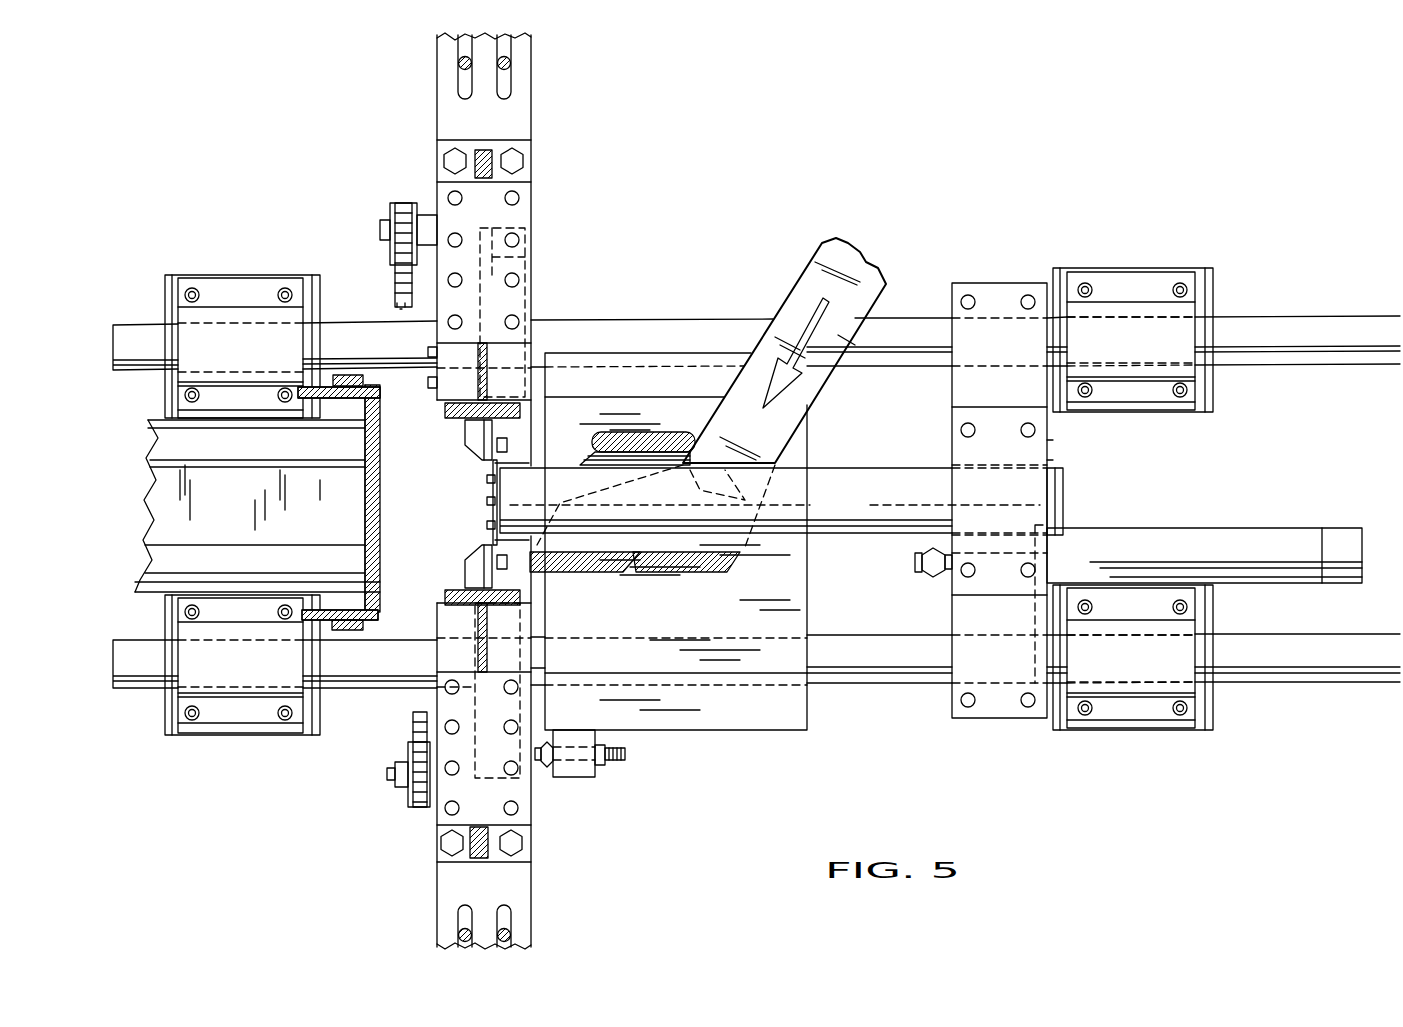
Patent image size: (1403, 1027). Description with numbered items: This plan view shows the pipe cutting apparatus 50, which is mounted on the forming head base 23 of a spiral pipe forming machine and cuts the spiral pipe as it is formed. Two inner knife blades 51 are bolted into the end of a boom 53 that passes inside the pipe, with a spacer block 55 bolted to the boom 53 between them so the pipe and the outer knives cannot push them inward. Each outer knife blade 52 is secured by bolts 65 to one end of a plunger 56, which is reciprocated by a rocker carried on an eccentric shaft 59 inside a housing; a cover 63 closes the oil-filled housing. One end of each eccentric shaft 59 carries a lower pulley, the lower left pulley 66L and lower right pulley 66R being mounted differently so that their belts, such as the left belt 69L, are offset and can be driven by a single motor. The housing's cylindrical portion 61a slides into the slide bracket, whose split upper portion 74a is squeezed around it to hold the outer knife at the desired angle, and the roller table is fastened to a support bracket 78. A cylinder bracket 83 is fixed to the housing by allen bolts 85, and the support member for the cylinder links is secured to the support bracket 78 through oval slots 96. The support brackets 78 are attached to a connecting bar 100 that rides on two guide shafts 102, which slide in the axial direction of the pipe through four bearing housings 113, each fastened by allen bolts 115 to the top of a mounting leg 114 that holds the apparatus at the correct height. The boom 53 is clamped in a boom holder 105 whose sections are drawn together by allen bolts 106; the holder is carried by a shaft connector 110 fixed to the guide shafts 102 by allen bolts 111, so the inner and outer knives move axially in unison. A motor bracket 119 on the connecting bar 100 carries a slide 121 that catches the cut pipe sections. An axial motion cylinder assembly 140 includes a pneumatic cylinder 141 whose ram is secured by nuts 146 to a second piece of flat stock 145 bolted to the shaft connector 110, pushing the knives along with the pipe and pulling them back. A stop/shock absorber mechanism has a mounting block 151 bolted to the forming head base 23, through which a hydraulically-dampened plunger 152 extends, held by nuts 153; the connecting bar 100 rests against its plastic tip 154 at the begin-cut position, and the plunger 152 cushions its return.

The forming head base 23 is at (775, 596).
The pipe cutting apparatus 50 is at (902, 268).
The inner knife blades 51 is at (487, 479).
The outer knife blades 52 is at (505, 447).
The boom 53 is at (781, 501).
The spacer block 55 is at (493, 502).
The plunger 56 is at (468, 443).
The eccentric shaft 59 is at (388, 216).
The cylindrical portion 61a is at (447, 412).
The cover 63 is at (496, 185).
The bolts 65 is at (505, 437).
The lower left pulley 66L is at (400, 205).
The lower right pulley 66R is at (395, 805).
The left belt 69L is at (392, 300).
The split upper portion 74a is at (503, 352).
The support bracket 78 is at (540, 250).
The cylinder bracket 83 is at (486, 152).
The allen bolts 85 is at (452, 156).
The oval slot 96 is at (470, 80).
The connecting bar 100 is at (518, 228).
The guide shafts 102 is at (1330, 343).
The boom holder 105 is at (1048, 452).
The allen bolts 106 is at (1028, 437).
The shaft connector 110 is at (1040, 283).
The allen bolts 111 is at (1028, 295).
The bearing housings 113 is at (248, 300).
The mounting legs 114 is at (315, 278).
The allen bolts 115 is at (192, 288).
The motor bracket 119 is at (333, 395).
The slide 121 is at (190, 503).
The axial motion cylinder assembly 140 is at (1287, 508).
The pneumatic cylinder 141 is at (1205, 528).
The second piece of flat stock 145 is at (943, 585).
The nuts 146 is at (925, 576).
The mounting block 151 is at (577, 740).
The hydraulically-dampened plunger 152 is at (628, 752).
The nuts 153 is at (603, 768).
The plastic tip 154 is at (550, 735).